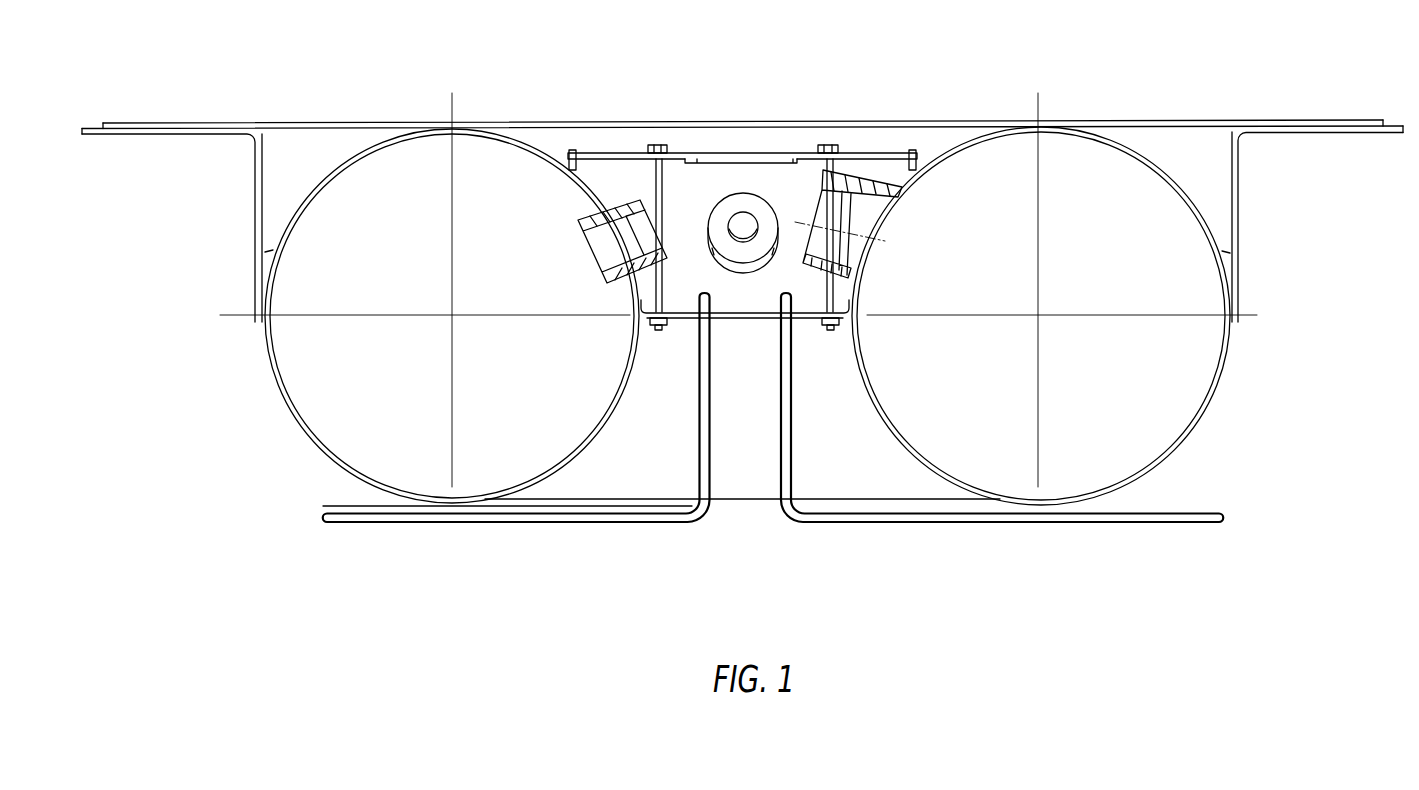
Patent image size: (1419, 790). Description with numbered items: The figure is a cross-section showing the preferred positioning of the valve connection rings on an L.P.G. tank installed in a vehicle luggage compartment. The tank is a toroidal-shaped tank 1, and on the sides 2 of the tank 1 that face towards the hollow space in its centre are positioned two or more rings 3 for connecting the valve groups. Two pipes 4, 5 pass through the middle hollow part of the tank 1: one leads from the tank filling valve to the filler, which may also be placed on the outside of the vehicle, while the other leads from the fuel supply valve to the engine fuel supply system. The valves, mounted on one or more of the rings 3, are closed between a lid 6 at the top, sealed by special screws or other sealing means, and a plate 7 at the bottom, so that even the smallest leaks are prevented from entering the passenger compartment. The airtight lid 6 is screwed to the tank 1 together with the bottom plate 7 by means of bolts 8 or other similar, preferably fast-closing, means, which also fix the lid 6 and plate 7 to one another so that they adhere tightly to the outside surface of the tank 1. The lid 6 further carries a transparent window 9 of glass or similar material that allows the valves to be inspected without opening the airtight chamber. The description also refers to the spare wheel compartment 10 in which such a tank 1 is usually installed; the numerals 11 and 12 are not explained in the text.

The toroidal-shaped tank 1 is at (1145, 178).
The sides of the tank 2 is at (588, 170).
The rings 3 is at (632, 200).
The pipe 4 is at (700, 521).
The pipe 5 is at (803, 518).
The lid 6 is at (682, 152).
The plate 7 is at (683, 322).
The bolts 8 is at (656, 322).
The transparent window 9 is at (730, 155).
The spare wheel compartment 10 is at (357, 150).
The side channel 11 is at (266, 253).
The top plate 12 is at (180, 122).